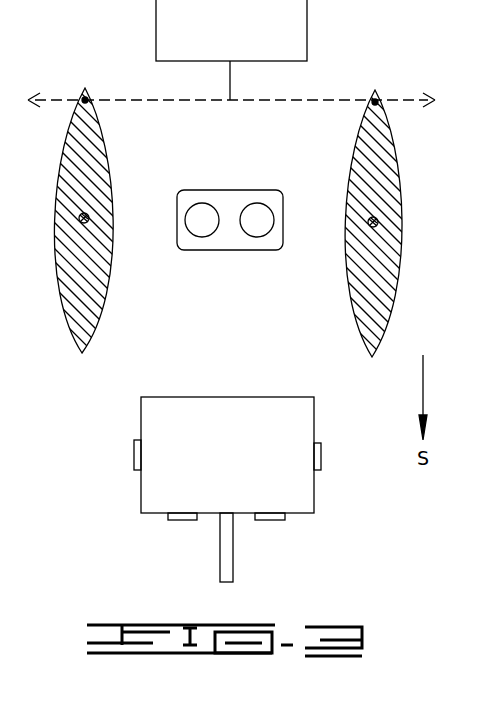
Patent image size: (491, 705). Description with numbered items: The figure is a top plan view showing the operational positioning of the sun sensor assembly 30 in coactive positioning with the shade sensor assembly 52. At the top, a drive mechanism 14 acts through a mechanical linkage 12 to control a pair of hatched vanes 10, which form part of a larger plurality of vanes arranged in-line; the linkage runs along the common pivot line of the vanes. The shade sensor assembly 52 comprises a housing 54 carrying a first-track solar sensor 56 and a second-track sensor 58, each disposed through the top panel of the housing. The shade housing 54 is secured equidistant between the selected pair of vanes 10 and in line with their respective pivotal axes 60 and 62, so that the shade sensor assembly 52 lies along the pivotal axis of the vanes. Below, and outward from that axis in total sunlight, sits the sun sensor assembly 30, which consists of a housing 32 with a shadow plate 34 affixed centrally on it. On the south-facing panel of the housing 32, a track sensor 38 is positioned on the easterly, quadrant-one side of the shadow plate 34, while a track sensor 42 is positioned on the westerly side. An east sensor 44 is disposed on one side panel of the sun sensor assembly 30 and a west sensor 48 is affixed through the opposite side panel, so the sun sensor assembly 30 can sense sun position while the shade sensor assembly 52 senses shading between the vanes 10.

The vanes 10 is at (63, 98).
The mechanical linkage 12 is at (232, 80).
The drive mechanism 14 is at (307, 23).
The sun sensor assembly 30 is at (229, 468).
The housing 32 is at (293, 398).
The shadow plate 34 is at (233, 578).
The track sensor 38 is at (285, 520).
The track sensor 42 is at (168, 520).
The east sensor 44 is at (318, 471).
The west sensor 48 is at (134, 471).
The shade sensor assembly 52 is at (233, 208).
The housing 54 is at (215, 192).
The Track 1 solar sensor 56 is at (203, 237).
The Track 2 sensor 58 is at (257, 237).
The pivotal axis 60 is at (90, 222).
The pivotal axis 62 is at (377, 225).